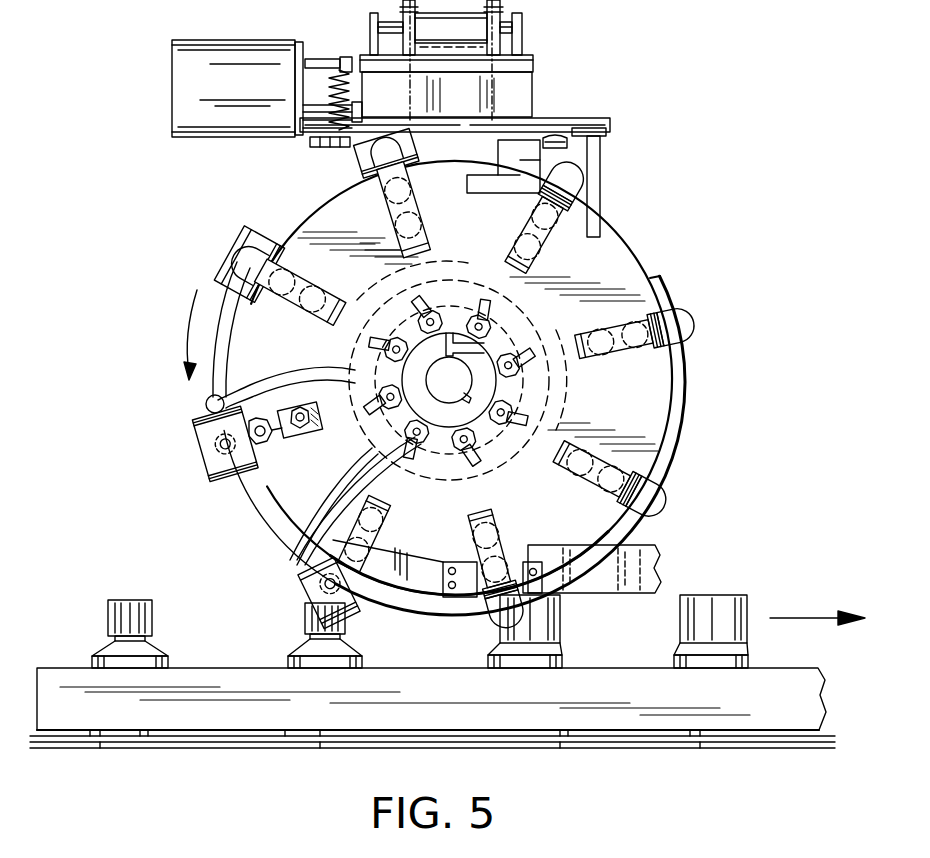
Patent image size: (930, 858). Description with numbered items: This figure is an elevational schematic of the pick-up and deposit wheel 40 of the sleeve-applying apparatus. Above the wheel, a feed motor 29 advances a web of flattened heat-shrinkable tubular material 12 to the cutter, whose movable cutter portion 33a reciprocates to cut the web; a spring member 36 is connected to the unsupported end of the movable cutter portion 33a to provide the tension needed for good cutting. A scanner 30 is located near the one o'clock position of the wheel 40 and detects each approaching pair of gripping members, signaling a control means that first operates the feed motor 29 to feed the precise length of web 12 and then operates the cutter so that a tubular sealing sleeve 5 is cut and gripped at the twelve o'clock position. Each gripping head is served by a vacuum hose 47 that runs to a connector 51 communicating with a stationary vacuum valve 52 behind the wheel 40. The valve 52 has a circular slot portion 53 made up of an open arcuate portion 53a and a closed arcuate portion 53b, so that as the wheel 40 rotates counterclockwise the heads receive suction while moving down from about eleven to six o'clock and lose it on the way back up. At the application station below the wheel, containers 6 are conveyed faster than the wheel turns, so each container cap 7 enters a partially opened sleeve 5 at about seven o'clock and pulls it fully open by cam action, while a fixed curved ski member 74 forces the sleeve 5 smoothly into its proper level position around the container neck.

The tubular sealing sleeve 5 is at (367, 160).
The container 6 is at (290, 660).
The container cap 7 is at (192, 451).
The web of flattened heat-shrinkable tubular material 12 is at (465, 97).
The feed motor 29 is at (270, 29).
The scanner 30 is at (520, 148).
The movable cutter portion 33a is at (340, 147).
The spring member 36 is at (323, 75).
The pick-up and deposit wheel 40 is at (557, 515).
The vacuum hose 47 is at (268, 378).
The connector 51 is at (362, 354).
The vacuum valve 52 is at (525, 322).
The circular slot portion 53 is at (422, 478).
The open arcuate portion 53a is at (421, 290).
The closed arcuate portion 53b is at (552, 372).
The curved ski member 74 is at (417, 577).